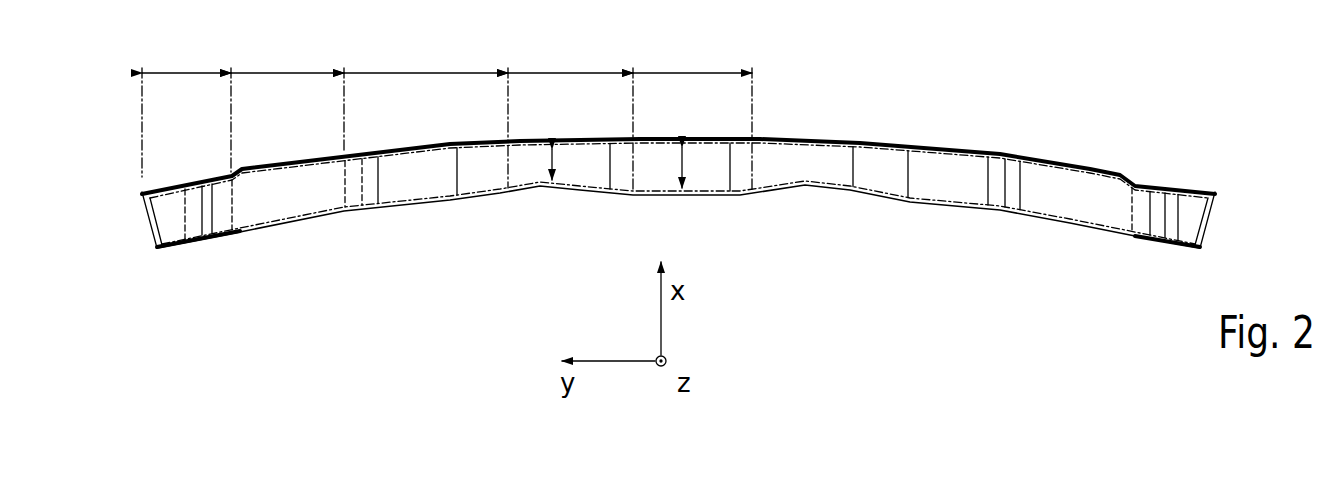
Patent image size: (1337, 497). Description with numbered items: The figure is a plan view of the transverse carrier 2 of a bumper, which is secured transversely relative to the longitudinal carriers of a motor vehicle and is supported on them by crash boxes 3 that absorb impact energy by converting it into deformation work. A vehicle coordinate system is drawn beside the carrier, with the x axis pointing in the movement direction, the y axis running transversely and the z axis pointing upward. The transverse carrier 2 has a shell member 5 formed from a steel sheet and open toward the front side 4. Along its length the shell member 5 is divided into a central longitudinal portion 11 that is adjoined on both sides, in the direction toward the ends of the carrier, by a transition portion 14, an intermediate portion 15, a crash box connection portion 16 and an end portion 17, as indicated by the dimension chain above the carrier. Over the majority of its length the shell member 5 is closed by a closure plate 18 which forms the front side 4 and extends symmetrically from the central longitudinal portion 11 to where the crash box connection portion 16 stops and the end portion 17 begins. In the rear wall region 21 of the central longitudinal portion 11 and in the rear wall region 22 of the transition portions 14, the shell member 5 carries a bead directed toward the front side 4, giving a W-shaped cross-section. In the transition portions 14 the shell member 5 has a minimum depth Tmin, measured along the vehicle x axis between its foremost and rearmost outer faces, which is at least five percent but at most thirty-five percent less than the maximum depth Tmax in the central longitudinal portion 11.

The transverse carrier 2 is at (1032, 103).
The crash boxes 3 is at (423, 183).
The front side 4 is at (918, 143).
The shell member 5 is at (935, 248).
The central longitudinal portion 11 is at (692, 116).
The transition portion 14 is at (570, 115).
The intermediate portion 15 is at (426, 96).
The crash box connection portion 16 is at (287, 107).
The end portion 17 is at (186, 109).
The closure plate 18 is at (813, 137).
The rear wall region of the central longitudinal portion 21 is at (688, 200).
The rear wall region of the transition portions 22 is at (805, 190).
The minimum depth Tmin is at (553, 165).
The maximum depth Tmax is at (685, 173).